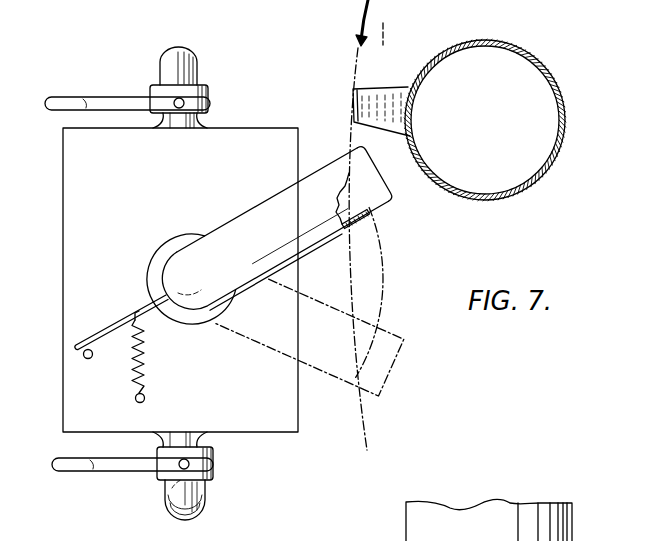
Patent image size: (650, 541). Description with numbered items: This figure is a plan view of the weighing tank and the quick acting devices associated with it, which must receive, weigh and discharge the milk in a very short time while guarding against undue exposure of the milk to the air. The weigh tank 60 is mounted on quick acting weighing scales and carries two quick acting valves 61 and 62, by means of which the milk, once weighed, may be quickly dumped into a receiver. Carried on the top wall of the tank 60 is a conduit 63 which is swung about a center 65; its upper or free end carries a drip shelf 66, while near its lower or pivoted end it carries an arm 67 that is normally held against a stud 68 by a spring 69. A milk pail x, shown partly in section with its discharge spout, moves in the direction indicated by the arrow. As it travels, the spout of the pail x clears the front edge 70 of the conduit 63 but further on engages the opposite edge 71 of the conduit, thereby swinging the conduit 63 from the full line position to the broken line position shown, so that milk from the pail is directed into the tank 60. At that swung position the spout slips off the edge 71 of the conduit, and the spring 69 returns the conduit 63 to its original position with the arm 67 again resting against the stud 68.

The weigh tank 60 is at (63, 193).
The quick acting valve 61 is at (69, 97).
The quick acting valve 62 is at (76, 472).
The conduit 63 is at (273, 203).
The center 65 is at (193, 278).
The drip shelf 66 is at (384, 184).
The arm 67 is at (208, 292).
The stud 68 is at (84, 358).
The spring 69 is at (144, 373).
The front edge 70 is at (348, 173).
The opposite edge 71 is at (369, 211).
The milk pail x is at (547, 68).